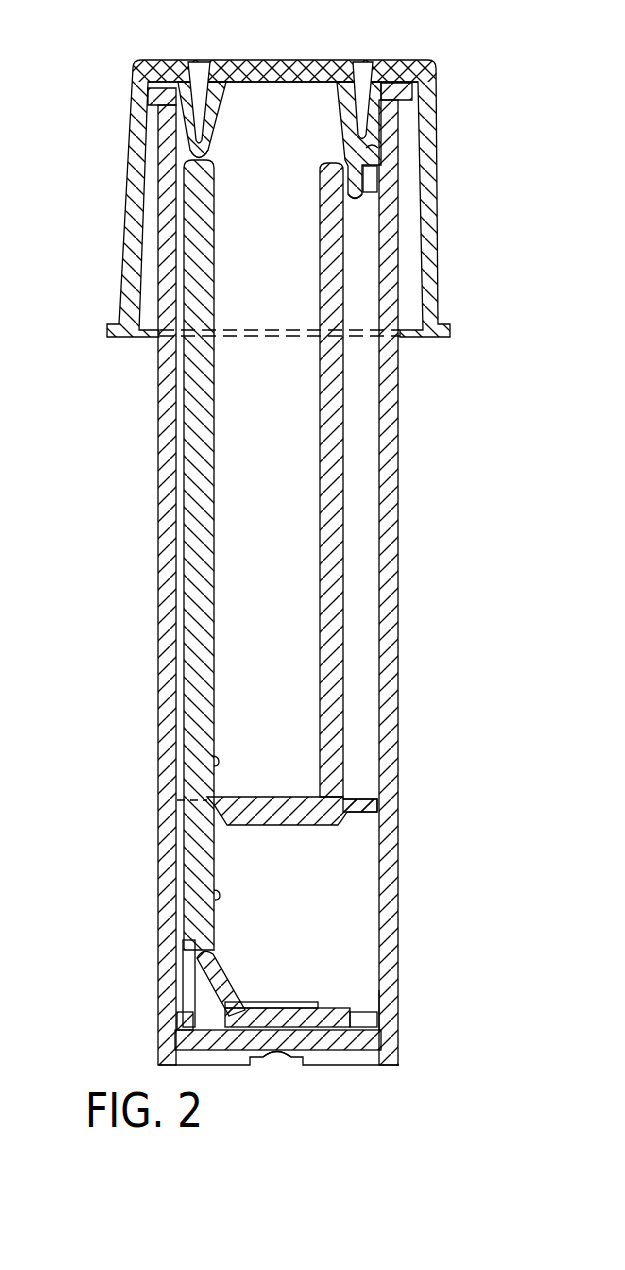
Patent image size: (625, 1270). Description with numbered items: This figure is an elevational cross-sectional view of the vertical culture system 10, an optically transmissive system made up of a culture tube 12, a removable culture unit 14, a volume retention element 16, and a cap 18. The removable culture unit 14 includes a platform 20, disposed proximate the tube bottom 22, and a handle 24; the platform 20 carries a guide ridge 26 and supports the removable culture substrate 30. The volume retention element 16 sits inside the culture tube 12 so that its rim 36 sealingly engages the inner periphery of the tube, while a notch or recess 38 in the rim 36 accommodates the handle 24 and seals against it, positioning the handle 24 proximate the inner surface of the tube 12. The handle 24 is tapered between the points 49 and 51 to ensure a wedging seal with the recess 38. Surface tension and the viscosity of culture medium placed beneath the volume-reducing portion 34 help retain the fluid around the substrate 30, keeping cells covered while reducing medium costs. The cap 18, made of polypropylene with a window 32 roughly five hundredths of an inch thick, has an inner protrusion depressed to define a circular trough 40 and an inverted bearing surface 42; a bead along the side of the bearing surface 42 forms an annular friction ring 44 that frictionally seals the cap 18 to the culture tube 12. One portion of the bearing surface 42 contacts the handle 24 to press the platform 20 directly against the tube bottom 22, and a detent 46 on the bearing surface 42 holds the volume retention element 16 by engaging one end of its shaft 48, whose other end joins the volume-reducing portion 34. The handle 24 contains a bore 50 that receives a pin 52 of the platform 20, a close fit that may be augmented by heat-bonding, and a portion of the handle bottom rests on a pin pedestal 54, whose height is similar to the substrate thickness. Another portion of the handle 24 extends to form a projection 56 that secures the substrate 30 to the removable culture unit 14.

The vertical culture system 10 is at (513, 82).
The culture tube 12 is at (160, 545).
The removable culture unit 14 is at (296, 887).
The volume retention element 16 is at (358, 746).
The cap 18 is at (95, 292).
The platform 20 is at (356, 1023).
The tube bottom 22 is at (348, 1043).
The handle 24 is at (200, 668).
The guide ridge 26 is at (290, 1002).
The removable culture substrate 30 is at (380, 1005).
The window 32 is at (290, 62).
The volume-reducing portion 34 is at (262, 797).
The rim 36 is at (378, 812).
The notch or recess 38 is at (176, 792).
The trough 40 is at (360, 70).
The inverted bearing surface 42 is at (205, 147).
The annular friction ring 44 is at (176, 128).
The detent 46 is at (356, 200).
The shaft 48 is at (343, 520).
The taper point 49 is at (212, 760).
The bore 50 is at (205, 956).
The taper point 51 is at (216, 893).
The pin 52 is at (190, 985).
The pin pedestal 54 is at (177, 1020).
The projection 56 is at (232, 1002).